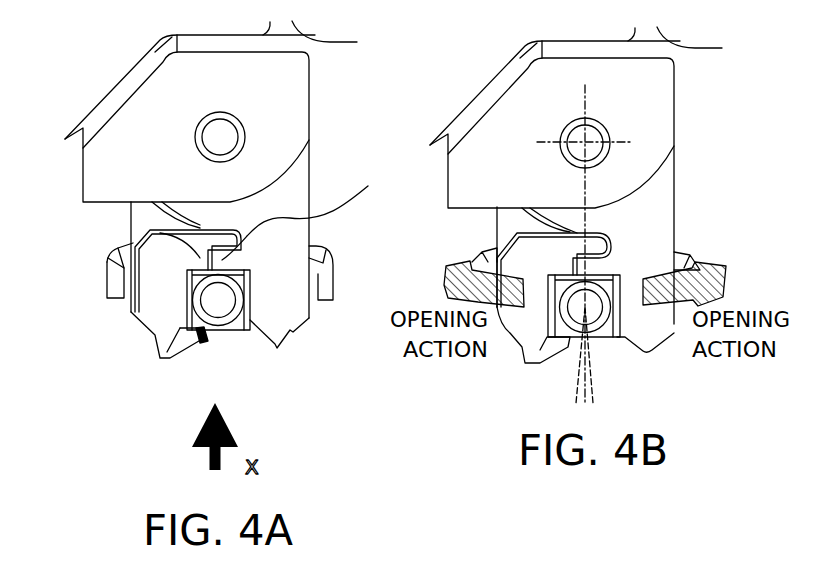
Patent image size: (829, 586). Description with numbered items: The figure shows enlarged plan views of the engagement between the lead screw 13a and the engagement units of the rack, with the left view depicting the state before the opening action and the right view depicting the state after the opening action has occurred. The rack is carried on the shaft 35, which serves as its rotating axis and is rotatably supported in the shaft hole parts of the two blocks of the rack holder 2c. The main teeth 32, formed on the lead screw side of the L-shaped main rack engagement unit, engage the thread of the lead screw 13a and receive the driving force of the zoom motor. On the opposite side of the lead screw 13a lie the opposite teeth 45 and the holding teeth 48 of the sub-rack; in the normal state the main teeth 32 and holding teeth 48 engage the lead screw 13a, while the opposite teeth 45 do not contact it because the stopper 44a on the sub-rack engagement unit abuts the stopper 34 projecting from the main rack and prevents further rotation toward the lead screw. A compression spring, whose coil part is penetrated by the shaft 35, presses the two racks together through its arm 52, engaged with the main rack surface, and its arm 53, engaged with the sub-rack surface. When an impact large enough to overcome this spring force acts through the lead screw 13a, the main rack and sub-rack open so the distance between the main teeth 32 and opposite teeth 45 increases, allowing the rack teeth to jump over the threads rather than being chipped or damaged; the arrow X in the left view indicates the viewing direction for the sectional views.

The rack holder 2c is at (275, 90).
The shaft 35 is at (220, 136).
The stopper 34 is at (307, 208).
The stopper 44a is at (127, 233).
The arm 53 is at (113, 283).
The arm 52 is at (336, 275).
The main teeth 32 is at (250, 328).
The lead screw 13a is at (216, 302).
The opposite teeth 45 is at (173, 322).
The holding teeth 48 is at (205, 337).